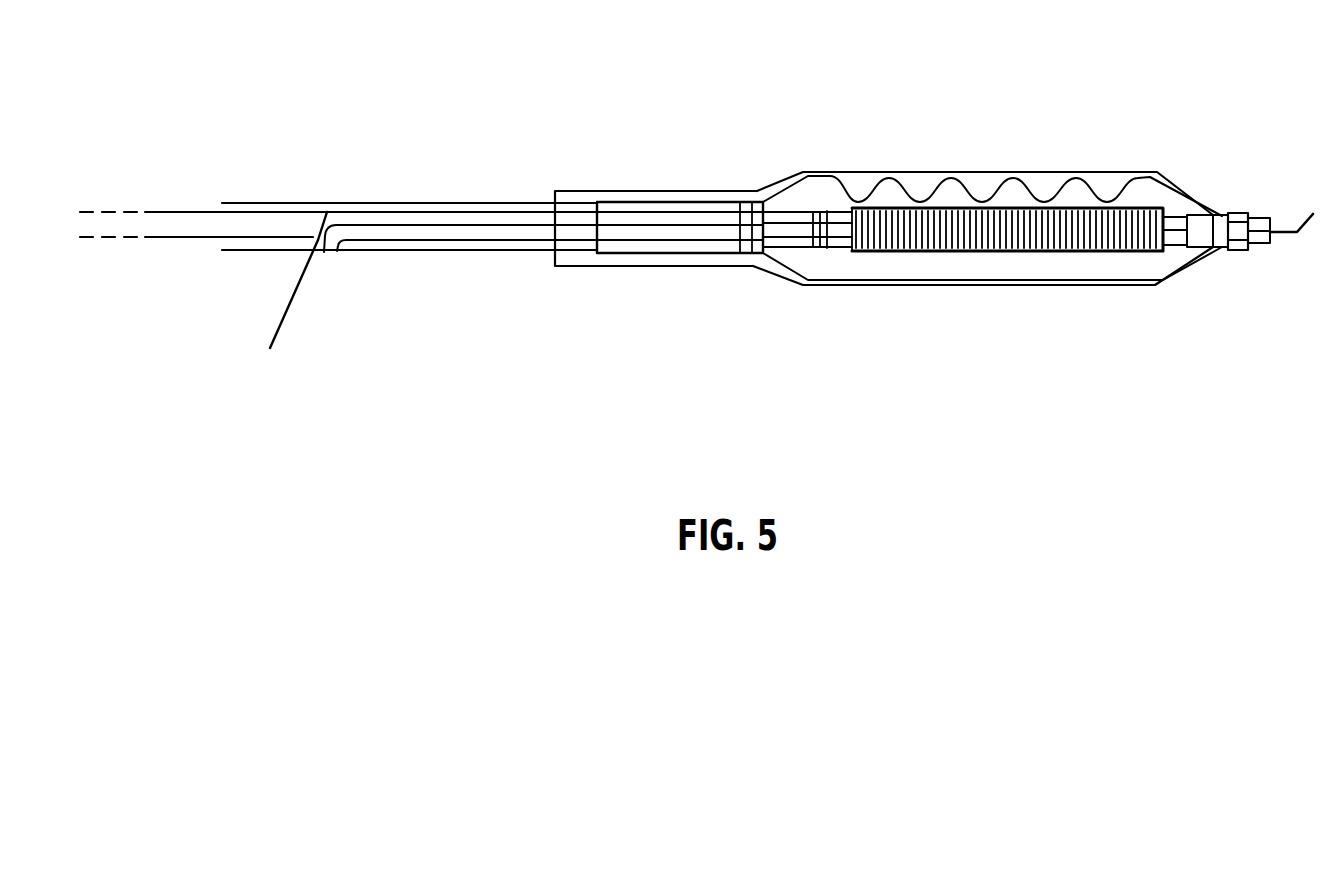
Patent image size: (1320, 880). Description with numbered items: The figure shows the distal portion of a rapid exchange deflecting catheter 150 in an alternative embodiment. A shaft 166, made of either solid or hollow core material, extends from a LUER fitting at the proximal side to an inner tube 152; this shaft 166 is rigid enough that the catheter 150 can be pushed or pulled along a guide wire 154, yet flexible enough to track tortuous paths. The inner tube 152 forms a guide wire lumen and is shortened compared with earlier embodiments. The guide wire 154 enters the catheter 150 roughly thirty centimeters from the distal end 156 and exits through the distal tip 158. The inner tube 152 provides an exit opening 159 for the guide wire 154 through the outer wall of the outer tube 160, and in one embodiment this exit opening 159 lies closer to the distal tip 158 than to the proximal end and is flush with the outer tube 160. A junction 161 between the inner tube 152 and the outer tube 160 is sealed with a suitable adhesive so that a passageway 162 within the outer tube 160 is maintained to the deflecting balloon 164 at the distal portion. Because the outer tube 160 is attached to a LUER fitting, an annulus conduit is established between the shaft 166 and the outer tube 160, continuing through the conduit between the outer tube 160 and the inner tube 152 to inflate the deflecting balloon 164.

The rapid exchange deflecting catheter 150 is at (690, 95).
The inner tube 152 is at (368, 243).
The guide wire 154 is at (276, 337).
The distal end 156 is at (1249, 201).
The distal tip 158 is at (1274, 237).
The exit opening 159 is at (324, 253).
The outer tube 160 is at (451, 251).
The junction 161 is at (312, 250).
The passageway 162 is at (519, 246).
The deflecting balloon 164 is at (1083, 177).
The shaft 166 is at (192, 212).